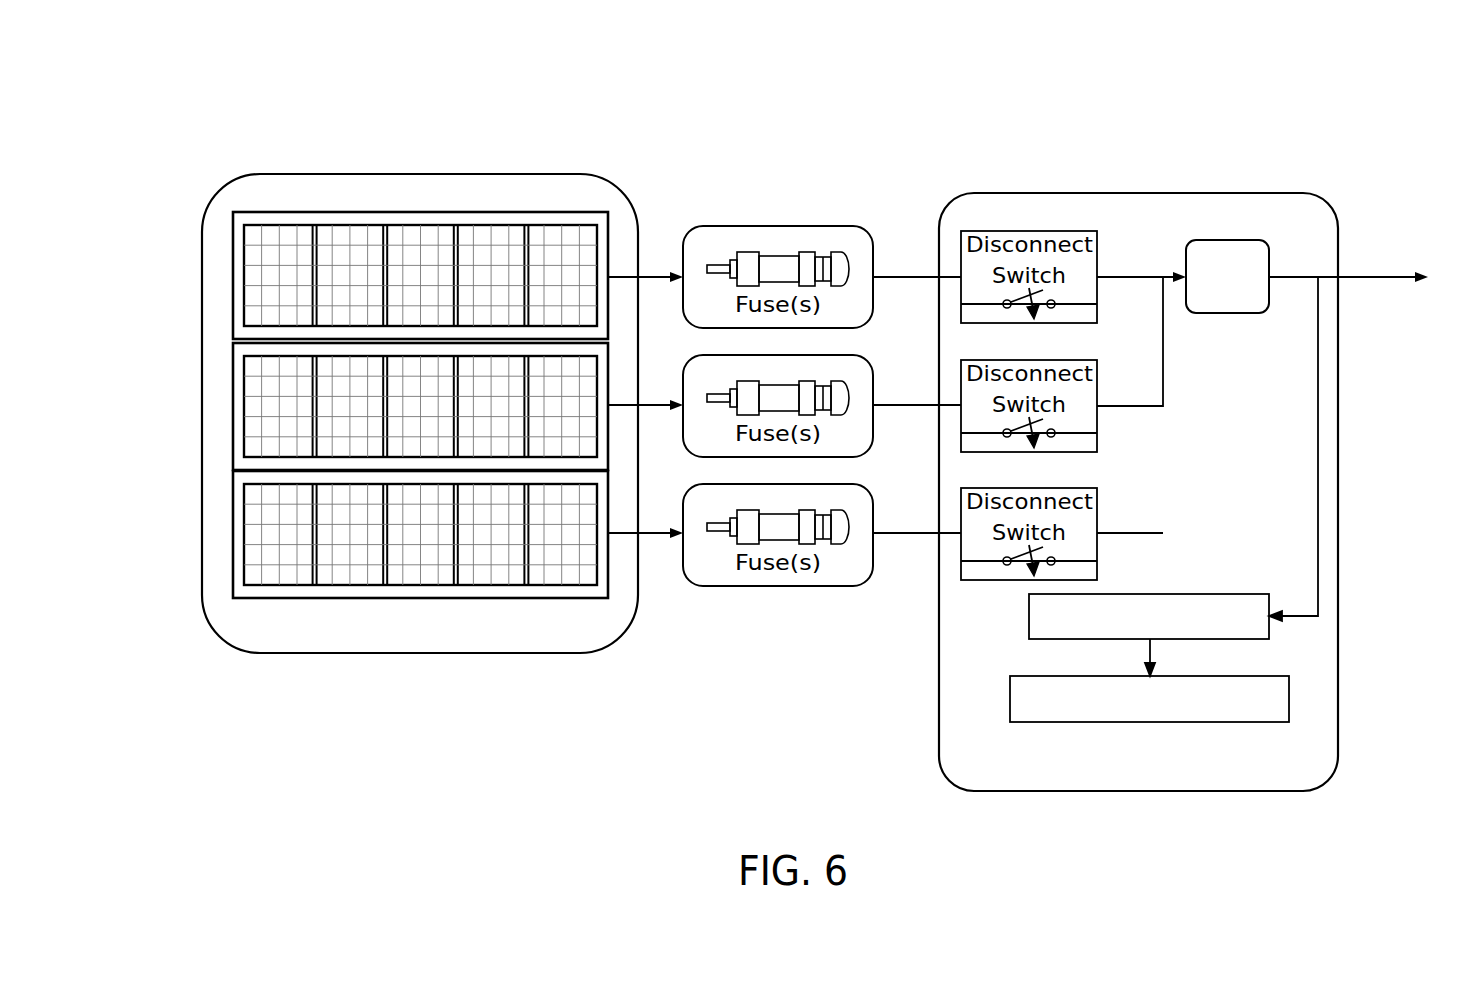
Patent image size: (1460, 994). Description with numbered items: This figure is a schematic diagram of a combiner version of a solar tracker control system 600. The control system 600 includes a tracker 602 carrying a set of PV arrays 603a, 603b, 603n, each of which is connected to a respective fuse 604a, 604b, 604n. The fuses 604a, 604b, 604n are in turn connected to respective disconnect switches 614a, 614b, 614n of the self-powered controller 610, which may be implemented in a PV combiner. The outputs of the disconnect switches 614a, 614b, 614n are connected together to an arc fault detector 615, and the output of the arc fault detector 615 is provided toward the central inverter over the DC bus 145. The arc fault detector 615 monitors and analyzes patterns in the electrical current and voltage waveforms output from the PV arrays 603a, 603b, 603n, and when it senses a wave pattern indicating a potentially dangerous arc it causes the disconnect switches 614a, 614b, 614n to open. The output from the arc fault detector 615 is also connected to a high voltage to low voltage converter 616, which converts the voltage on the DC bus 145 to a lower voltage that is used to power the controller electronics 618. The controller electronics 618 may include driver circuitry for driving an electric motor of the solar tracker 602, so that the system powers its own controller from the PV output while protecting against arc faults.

The solar tracker control system 600 is at (328, 113).
The tracker 602 is at (418, 653).
The PV array 603a is at (233, 277).
The PV array 603b is at (233, 405).
The PV array 603n is at (233, 533).
The fuse 604a is at (779, 226).
The fuse 604b is at (873, 370).
The fuse 604n is at (778, 587).
The self-powered controller 610 is at (1137, 193).
The disconnect switch 614a is at (1010, 231).
The disconnect switch 614b is at (1097, 378).
The disconnect switch 614n is at (988, 582).
The arc fault detector 615 is at (1228, 313).
The high voltage to low voltage converter 616 is at (1226, 594).
The controller electronics 618 is at (1289, 690).
The DC bus 145 is at (1375, 277).